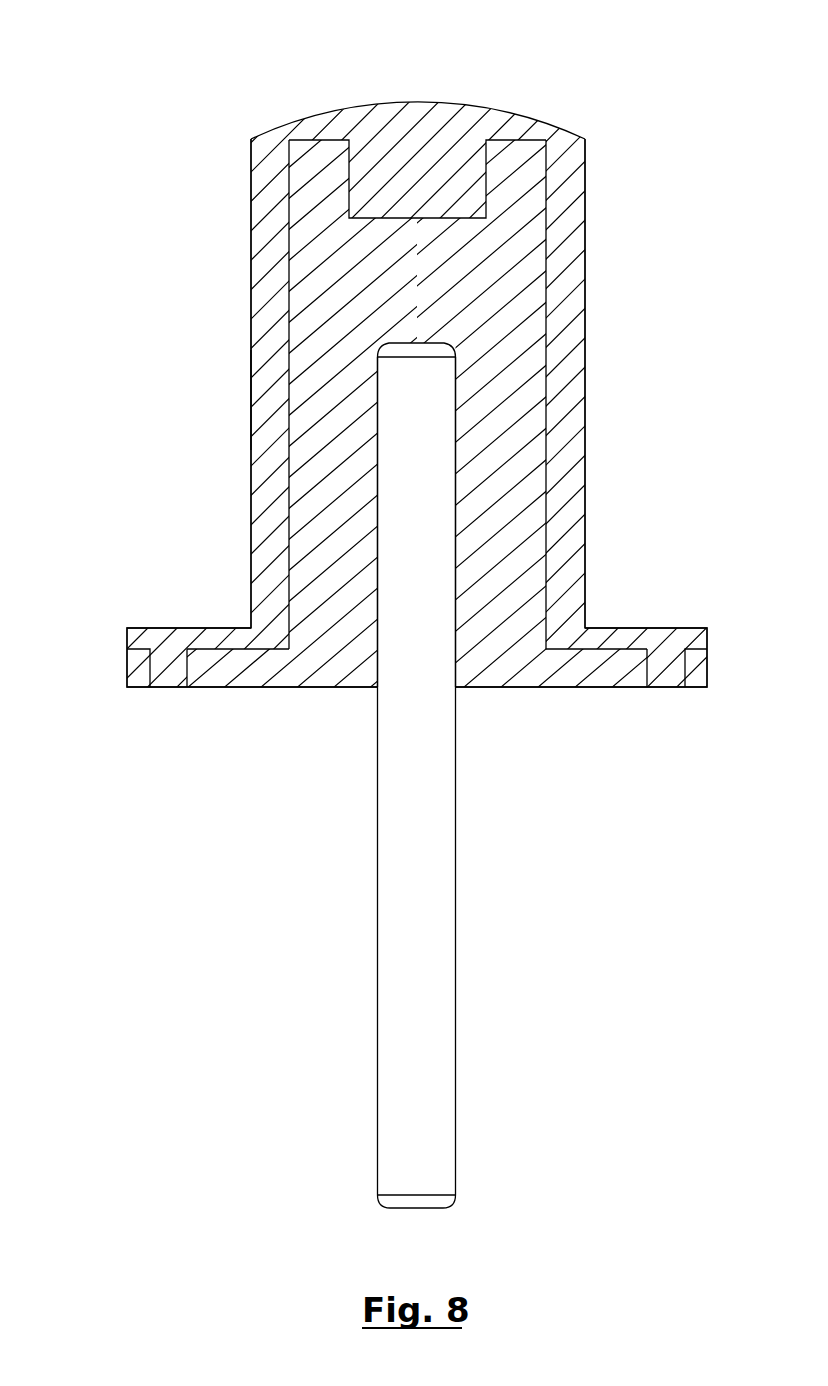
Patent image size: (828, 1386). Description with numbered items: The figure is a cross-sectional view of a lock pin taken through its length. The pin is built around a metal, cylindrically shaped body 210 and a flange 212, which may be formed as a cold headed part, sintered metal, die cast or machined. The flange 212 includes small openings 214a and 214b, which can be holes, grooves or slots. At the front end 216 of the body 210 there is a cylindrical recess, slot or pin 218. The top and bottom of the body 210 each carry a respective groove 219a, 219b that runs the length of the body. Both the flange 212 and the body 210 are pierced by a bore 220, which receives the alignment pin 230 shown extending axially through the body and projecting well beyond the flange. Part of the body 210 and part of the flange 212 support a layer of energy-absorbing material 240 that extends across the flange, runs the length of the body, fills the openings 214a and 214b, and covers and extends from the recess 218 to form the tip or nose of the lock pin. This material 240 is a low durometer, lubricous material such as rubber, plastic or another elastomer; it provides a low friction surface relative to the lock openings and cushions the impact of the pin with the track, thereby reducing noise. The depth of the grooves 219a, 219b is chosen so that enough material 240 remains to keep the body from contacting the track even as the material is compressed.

The body 210 is at (490, 458).
The flange 212 is at (253, 690).
The small opening 214a is at (141, 688).
The small opening 214b is at (663, 687).
The front end 216 is at (532, 172).
The cylindrical recess 218 is at (433, 128).
The groove 219a is at (267, 162).
The groove 219b is at (570, 255).
The bore 220 is at (377, 592).
The alignment pin 230 is at (420, 1155).
The energy-absorbing material 240 is at (250, 397).